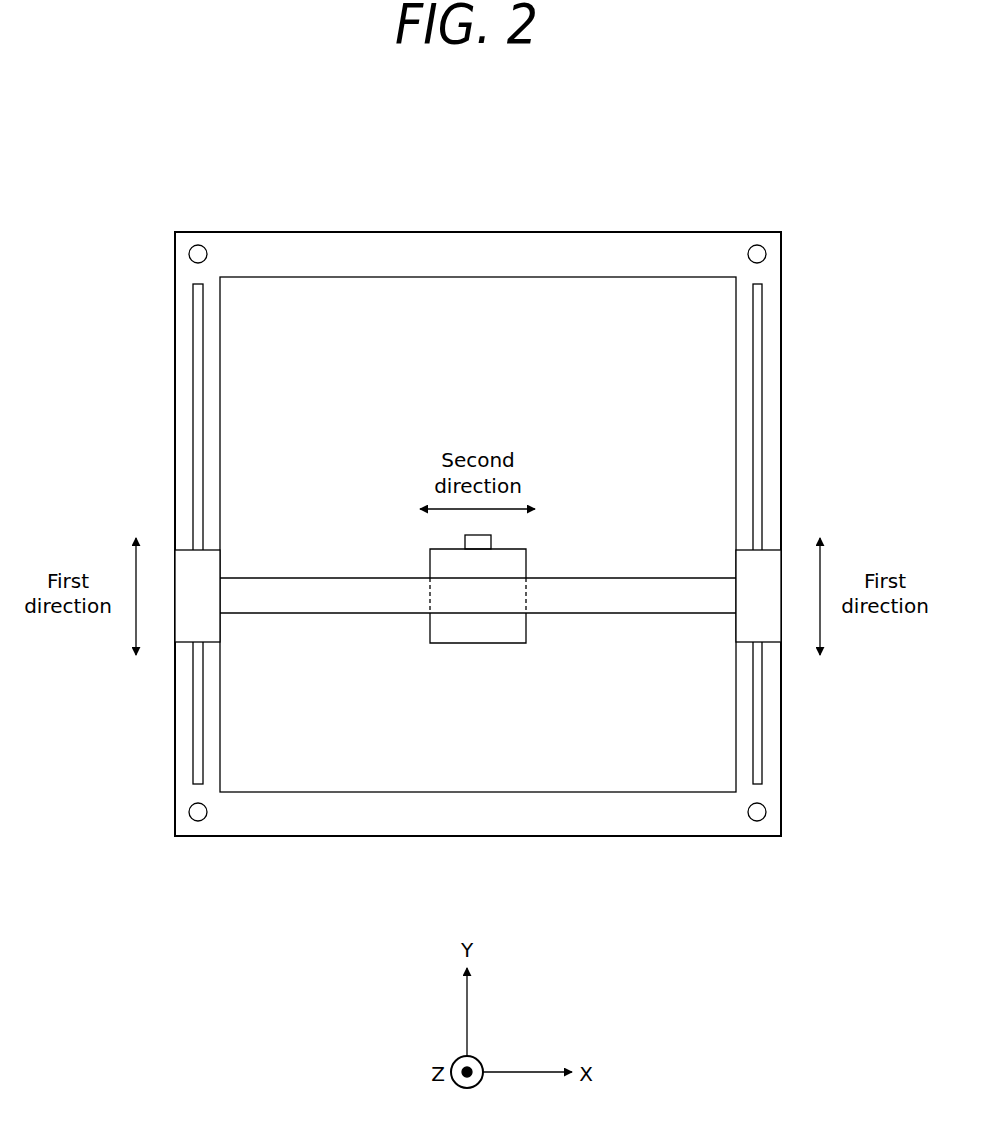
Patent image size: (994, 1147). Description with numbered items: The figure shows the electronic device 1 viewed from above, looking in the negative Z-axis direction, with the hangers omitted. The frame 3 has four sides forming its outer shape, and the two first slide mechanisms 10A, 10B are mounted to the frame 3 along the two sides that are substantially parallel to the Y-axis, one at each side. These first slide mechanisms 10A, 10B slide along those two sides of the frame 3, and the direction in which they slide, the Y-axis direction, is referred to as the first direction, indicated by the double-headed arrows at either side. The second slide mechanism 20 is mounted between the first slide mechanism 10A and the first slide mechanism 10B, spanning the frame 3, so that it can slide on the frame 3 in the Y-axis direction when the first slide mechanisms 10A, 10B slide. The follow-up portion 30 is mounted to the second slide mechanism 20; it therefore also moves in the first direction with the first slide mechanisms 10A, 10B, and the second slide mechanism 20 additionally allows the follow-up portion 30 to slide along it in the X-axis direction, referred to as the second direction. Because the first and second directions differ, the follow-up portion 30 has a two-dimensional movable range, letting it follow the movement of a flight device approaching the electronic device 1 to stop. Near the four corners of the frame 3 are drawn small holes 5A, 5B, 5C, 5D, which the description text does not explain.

The electronic device 1 is at (386, 180).
The frame 3 is at (580, 246).
The fixing hole 5A is at (757, 821).
The fixing hole 5B is at (198, 821).
The fixing hole 5C is at (200, 245).
The fixing hole 5D is at (758, 245).
The first slide mechanism 10A is at (748, 620).
The first slide mechanism 10B is at (207, 620).
The second slide mechanism 20 is at (625, 586).
The follow-up portion 30 is at (480, 636).